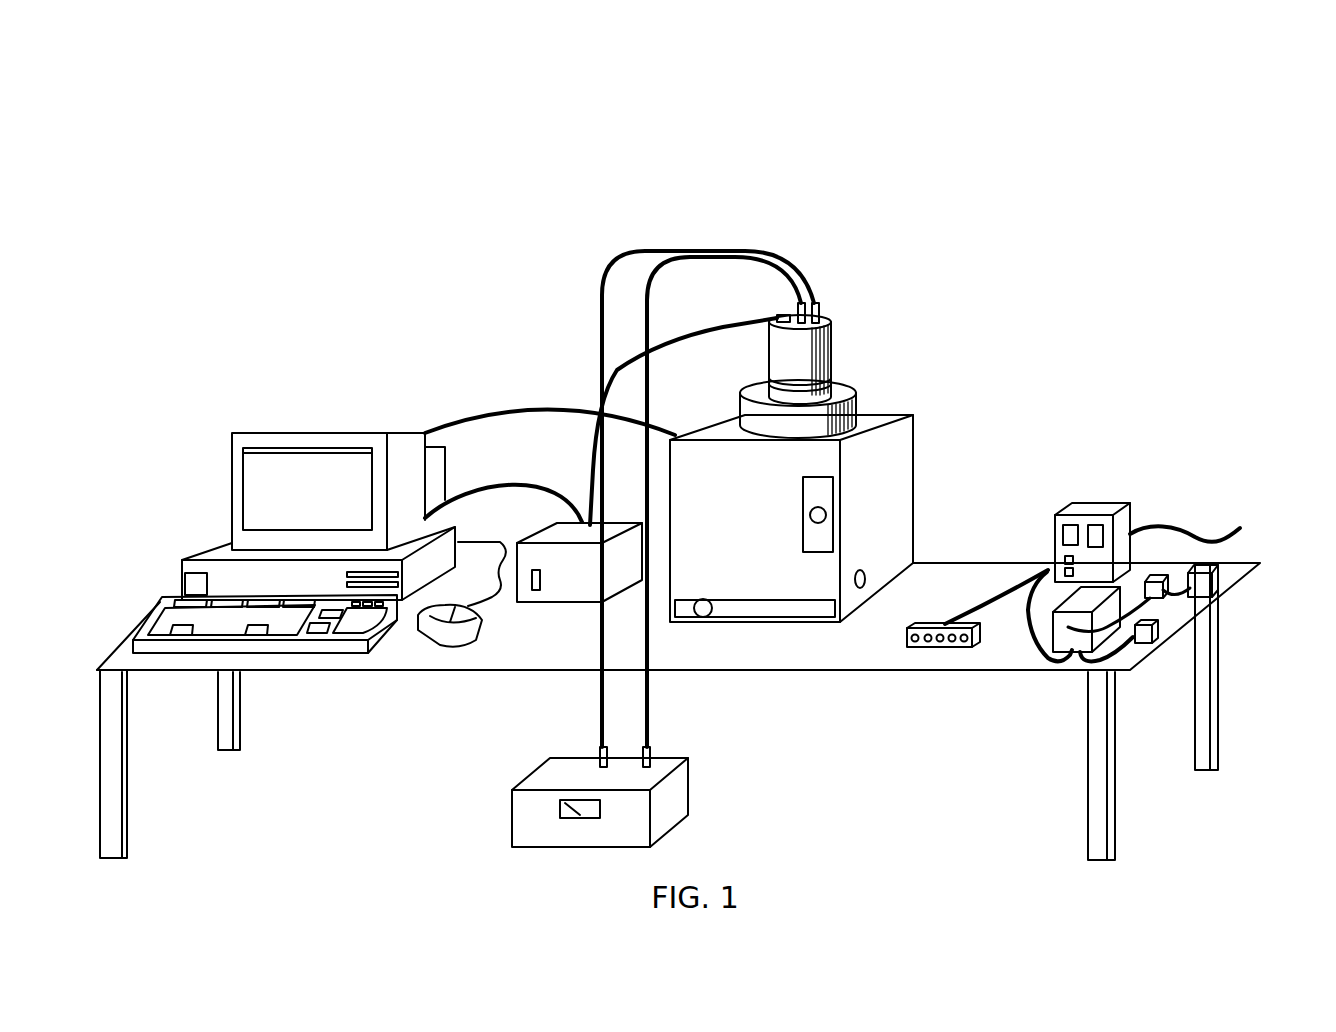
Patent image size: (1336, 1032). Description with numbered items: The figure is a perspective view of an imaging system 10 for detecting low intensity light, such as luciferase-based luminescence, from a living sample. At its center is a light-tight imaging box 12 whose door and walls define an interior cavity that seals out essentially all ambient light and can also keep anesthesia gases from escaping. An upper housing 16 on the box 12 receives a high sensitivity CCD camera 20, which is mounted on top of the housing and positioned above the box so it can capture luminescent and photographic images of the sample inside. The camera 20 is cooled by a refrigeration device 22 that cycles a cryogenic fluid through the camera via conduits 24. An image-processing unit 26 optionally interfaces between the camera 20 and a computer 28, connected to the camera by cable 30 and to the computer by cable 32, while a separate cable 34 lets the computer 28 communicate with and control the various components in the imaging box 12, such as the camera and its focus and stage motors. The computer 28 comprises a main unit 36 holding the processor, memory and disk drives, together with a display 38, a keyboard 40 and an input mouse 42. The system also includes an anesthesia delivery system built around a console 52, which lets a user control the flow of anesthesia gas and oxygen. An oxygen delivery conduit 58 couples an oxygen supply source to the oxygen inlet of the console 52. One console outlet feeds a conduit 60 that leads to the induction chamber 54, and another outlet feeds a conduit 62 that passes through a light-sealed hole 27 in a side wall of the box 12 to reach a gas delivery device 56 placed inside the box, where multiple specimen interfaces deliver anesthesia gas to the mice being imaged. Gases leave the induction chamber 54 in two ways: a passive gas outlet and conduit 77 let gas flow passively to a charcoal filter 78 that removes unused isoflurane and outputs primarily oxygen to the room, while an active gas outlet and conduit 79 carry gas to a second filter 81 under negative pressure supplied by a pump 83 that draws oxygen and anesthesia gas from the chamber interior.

The imaging system 10 is at (318, 233).
The imaging box 12 is at (950, 400).
The upper housing 16 is at (840, 390).
The CCD camera 20 is at (823, 340).
The refrigeration device 22 is at (570, 775).
The conduits 24 is at (597, 417).
The image-processing unit 26 is at (617, 570).
The light-sealed hole 27 is at (866, 575).
The computer 28 is at (243, 418).
The cable 30 is at (730, 322).
The cable 32 is at (515, 478).
The cable 34 is at (545, 407).
The main unit 36 is at (222, 550).
The display 38 is at (232, 456).
The keyboard 40 is at (223, 623).
The input mouse 42 is at (423, 610).
The console 52 is at (1097, 502).
The induction chamber 54 is at (1110, 615).
The gas delivery device 56 is at (920, 643).
The oxygen delivery conduit 58 is at (1187, 530).
The conduit 60 is at (1023, 600).
The conduit 62 is at (980, 597).
The conduit 77 is at (1107, 660).
The filter 78 is at (1160, 630).
The conduit 79 is at (1153, 610).
The filter 81 is at (1167, 590).
The pump 83 is at (1213, 583).